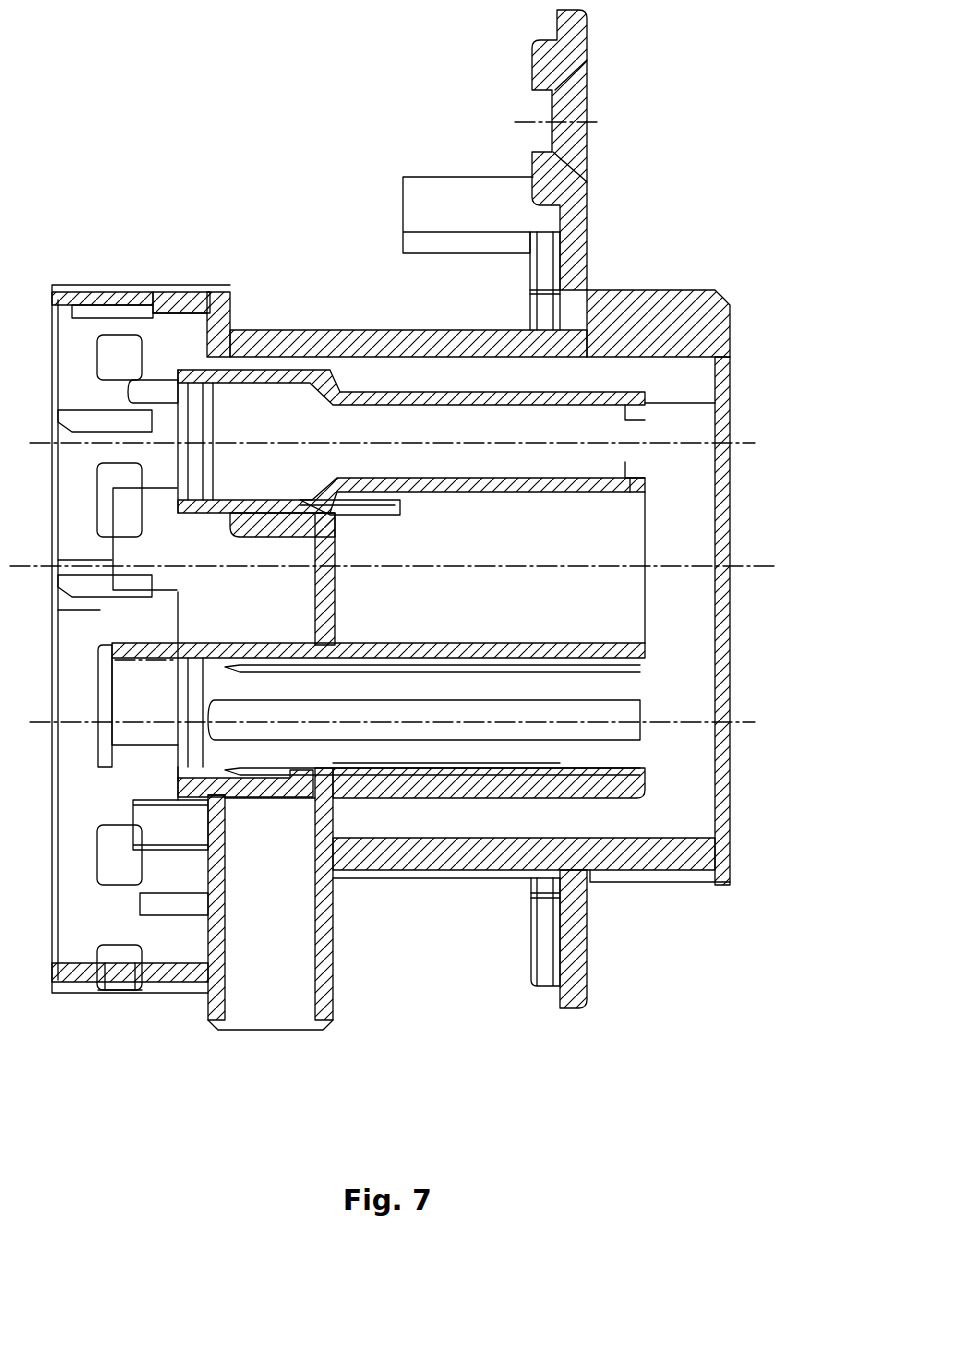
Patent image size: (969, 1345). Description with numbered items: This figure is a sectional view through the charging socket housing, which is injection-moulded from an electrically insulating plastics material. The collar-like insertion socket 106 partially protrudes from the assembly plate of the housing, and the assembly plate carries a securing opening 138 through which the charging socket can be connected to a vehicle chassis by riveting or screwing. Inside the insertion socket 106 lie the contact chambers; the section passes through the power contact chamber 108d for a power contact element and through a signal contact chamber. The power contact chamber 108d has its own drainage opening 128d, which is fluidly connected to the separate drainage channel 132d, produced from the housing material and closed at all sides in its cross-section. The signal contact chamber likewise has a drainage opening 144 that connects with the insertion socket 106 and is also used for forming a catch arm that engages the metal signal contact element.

The insertion socket 106 is at (702, 866).
The securing opening 138 is at (559, 150).
The drainage opening 144 is at (320, 502).
The drainage opening 128d is at (273, 790).
The power contact chamber 108d is at (620, 782).
The drainage channel 132d is at (290, 1015).